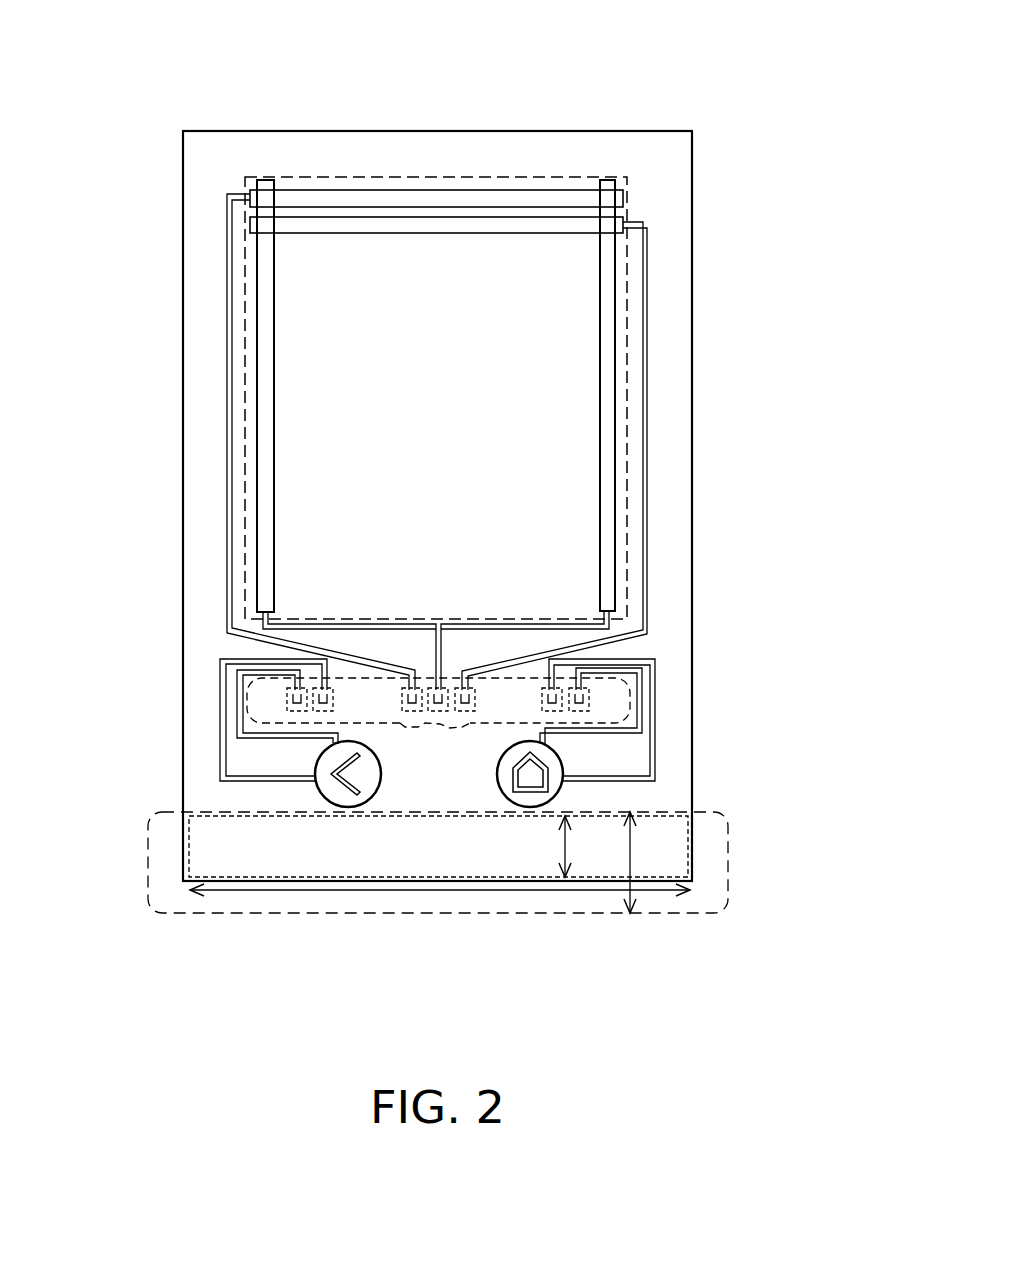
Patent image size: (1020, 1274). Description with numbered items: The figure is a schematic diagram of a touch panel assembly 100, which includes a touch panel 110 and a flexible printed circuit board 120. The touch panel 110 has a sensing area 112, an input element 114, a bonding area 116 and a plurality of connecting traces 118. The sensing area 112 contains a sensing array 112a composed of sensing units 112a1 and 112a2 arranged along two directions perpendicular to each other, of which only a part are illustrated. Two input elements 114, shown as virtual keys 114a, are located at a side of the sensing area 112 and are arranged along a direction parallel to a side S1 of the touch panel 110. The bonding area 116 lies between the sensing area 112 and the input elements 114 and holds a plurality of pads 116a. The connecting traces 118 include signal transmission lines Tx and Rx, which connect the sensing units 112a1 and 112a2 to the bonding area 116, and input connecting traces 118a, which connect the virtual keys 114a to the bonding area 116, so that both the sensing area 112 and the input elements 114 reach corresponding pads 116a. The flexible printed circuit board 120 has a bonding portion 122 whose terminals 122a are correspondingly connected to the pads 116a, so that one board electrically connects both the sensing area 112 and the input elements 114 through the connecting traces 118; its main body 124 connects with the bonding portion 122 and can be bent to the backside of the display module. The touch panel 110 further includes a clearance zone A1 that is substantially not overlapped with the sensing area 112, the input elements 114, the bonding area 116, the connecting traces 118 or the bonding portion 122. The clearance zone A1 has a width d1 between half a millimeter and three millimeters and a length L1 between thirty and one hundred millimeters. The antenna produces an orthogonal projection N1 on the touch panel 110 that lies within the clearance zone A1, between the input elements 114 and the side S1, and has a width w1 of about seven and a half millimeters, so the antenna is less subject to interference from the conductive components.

The touch panel assembly 100 is at (727, 1044).
The touch panel 110 is at (712, 506).
The sensing area 112 is at (449, 176).
The sensing array 112a is at (635, 53).
The sensing unit 112a1 is at (528, 190).
The sensing unit 112a2 is at (610, 217).
The input element 114 is at (590, 797).
The virtual key 114a is at (535, 770).
The bonding area 116 is at (245, 703).
The pad 116a is at (290, 693).
The connecting trace 118 is at (226, 411).
The input connecting trace 118a is at (637, 685).
The flexible printed circuit board 120 is at (62, 777).
The bonding portion 122 is at (346, 745).
The terminal 122a is at (293, 707).
The main body 124 is at (418, 727).
The orthogonal projection N1 is at (728, 850).
The side S1 is at (240, 913).
The length L1 is at (440, 891).
The clearance zone A1 is at (515, 878).
The width d1 is at (565, 850).
The width w1 is at (630, 865).